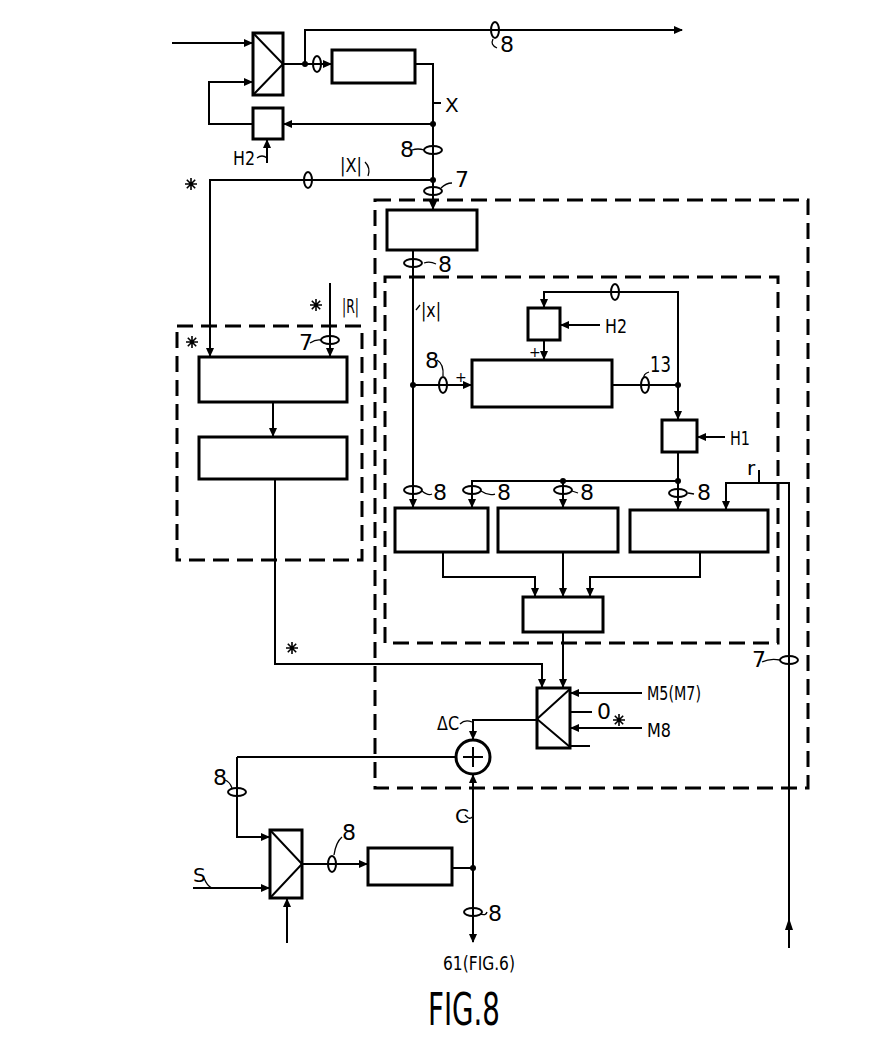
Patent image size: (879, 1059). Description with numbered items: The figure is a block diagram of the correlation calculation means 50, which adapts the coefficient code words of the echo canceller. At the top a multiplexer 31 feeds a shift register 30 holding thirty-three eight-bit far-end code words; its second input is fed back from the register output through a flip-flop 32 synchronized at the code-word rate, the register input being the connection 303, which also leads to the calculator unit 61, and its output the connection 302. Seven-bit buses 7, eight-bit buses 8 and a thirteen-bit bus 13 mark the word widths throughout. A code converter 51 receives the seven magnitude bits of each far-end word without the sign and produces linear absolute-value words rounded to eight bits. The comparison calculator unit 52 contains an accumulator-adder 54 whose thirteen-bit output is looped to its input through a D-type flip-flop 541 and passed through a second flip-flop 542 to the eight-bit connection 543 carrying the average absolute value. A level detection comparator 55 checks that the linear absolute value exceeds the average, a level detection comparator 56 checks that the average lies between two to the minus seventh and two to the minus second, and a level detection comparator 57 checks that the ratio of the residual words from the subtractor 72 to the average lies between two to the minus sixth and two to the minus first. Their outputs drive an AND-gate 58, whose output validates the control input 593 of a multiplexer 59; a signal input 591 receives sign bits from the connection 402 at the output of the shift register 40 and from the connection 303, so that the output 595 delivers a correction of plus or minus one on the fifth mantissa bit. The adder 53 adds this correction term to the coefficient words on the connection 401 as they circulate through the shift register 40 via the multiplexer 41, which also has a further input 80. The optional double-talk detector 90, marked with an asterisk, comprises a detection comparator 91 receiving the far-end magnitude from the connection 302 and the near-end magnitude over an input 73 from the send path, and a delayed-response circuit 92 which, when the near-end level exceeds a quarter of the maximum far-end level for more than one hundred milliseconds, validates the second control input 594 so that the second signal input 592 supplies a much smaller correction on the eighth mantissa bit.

The multiplexer 31 is at (270, 33).
The shift register 30 is at (396, 84).
The flip-flop 32 is at (284, 113).
The connection 303 is at (593, 31).
The output connection 302 is at (452, 149).
The correlation calculation means 50 is at (575, 200).
The code converter 51 is at (477, 228).
The comparison calculator unit 52 is at (688, 278).
The D-type flip-flop 541 is at (528, 328).
The accumulator-adder 54 is at (538, 408).
The D-type flip-flop 542 is at (662, 437).
The connection 543 is at (676, 468).
The level detection comparator 55 is at (428, 553).
The level detection comparator 56 is at (532, 553).
The level detection comparator 57 is at (658, 556).
The AND-gate 58 is at (603, 614).
The multiplexer 59 is at (537, 705).
The input 591 is at (569, 692).
The second signal input 592 is at (600, 741).
The control input 593 is at (565, 680).
The second control input 594 is at (538, 686).
The output 595 is at (537, 721).
The adder 53 is at (488, 766).
The double-talk detector 90 is at (272, 324).
The detection comparator 91 is at (251, 357).
The delayed-response circuit 92 is at (255, 437).
The multiplexer 41 is at (292, 830).
The shift register 40 is at (418, 848).
The output line 401 is at (476, 826).
The connection 402 is at (476, 888).
The calculator unit 61 is at (726, 31).
The subtractor 72 is at (782, 729).
The element of FIG. 6 73 is at (338, 308).
The element of FIG. 6 80 is at (291, 937).
The 8-bit bus 8 is at (316, 73).
The 7-bit bus 7 is at (310, 172).
The 13-bit bus 13 is at (620, 299).